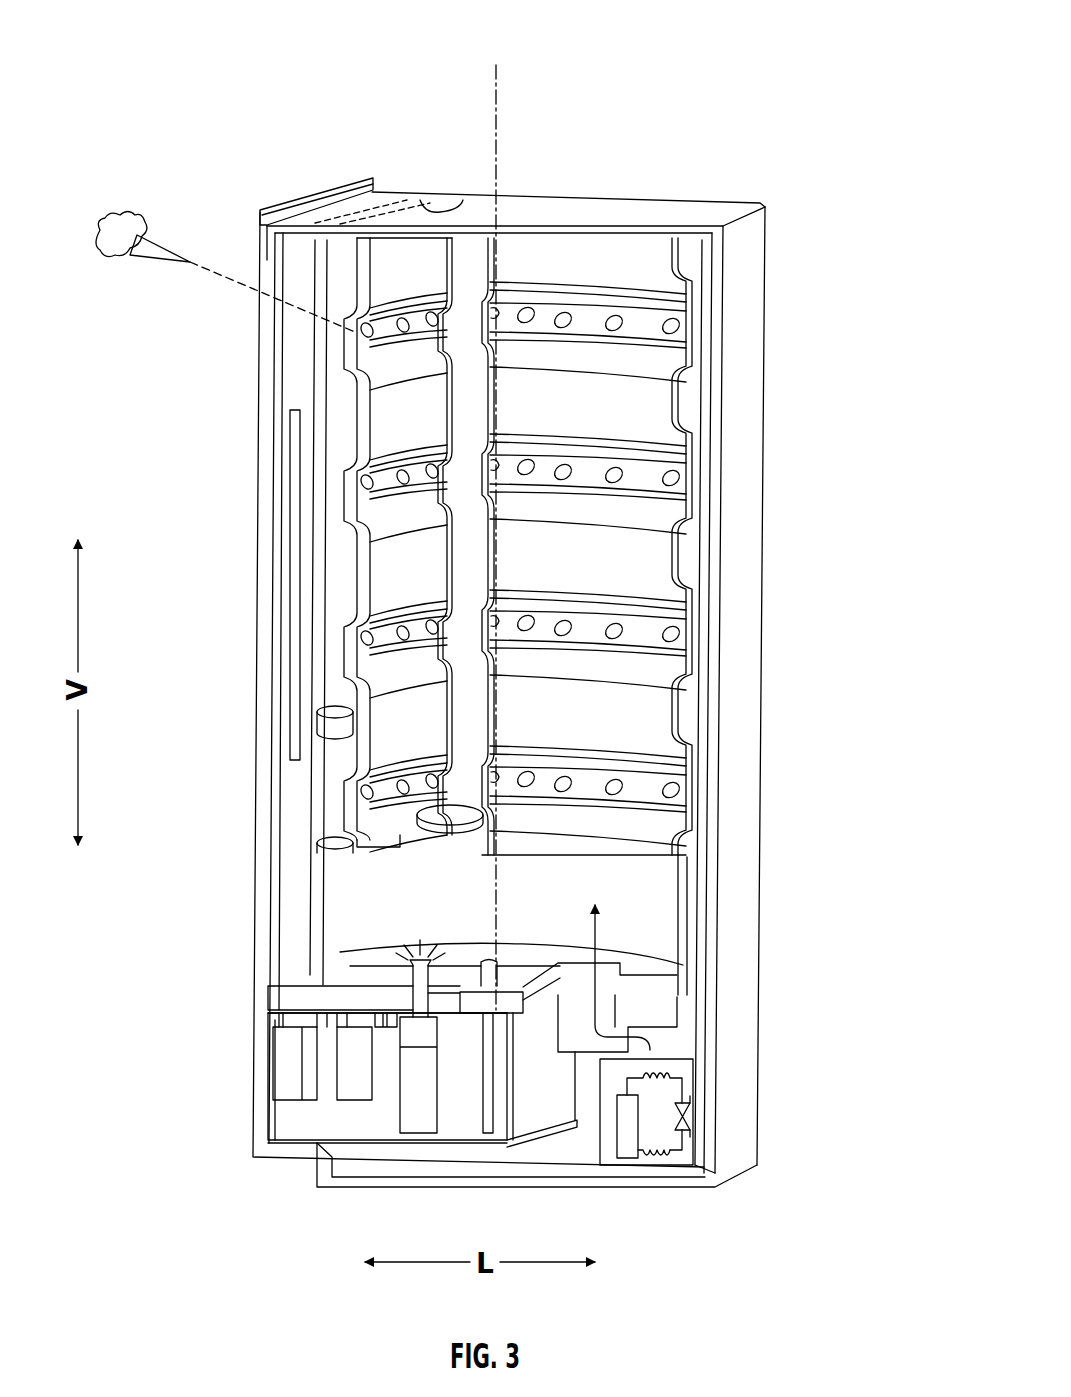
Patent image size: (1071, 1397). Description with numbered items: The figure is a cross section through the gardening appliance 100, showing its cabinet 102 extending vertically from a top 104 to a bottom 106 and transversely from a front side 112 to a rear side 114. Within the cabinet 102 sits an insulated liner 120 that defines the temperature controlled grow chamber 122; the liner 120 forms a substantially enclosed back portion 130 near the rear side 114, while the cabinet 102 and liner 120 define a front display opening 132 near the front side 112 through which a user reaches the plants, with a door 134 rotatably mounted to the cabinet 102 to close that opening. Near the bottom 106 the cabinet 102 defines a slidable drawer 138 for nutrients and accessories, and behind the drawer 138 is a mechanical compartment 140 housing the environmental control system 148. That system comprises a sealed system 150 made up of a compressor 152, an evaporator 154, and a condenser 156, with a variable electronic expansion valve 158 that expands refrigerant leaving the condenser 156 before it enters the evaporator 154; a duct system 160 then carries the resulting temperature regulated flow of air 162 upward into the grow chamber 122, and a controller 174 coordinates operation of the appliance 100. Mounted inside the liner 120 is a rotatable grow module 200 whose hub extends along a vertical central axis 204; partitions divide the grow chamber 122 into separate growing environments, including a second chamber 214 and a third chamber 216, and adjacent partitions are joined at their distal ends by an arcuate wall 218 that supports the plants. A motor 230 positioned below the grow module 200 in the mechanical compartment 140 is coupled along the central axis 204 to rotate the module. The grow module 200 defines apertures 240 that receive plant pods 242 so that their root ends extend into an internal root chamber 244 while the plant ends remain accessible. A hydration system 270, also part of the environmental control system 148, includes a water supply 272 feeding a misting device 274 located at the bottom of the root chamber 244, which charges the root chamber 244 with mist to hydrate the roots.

The gardening appliance 100 is at (822, 92).
The cabinet 102 is at (750, 343).
The top 104 is at (597, 248).
The bottom 106 is at (388, 1185).
The front side 112 is at (375, 178).
The rear side 114 is at (755, 520).
The insulated liner 120 is at (708, 240).
The grow chamber 122 is at (632, 262).
The enclosed back portion 130 is at (712, 640).
The front display opening 132 is at (330, 786).
The door 134 is at (258, 312).
The drawer 138 is at (262, 1085).
The mechanical compartment 140 is at (560, 1155).
The environmental control system 148 is at (698, 1106).
The sealed system 150 is at (694, 1126).
The compressor 152 is at (632, 1160).
The evaporator 154 is at (667, 1157).
The condenser 156 is at (668, 1060).
The variable electronic expansion valve 158 is at (695, 1120).
The duct system 160 is at (682, 1028).
The flow of air 162 is at (596, 927).
The controller 174 is at (457, 205).
The grow module 200 is at (553, 275).
The central axis 204 is at (508, 95).
The second chamber 214 is at (690, 588).
The third chamber 216 is at (332, 598).
The arcuate wall 218 is at (655, 422).
The motor 230 is at (472, 1016).
The aperture 240 is at (672, 782).
The plant pod 242 is at (165, 236).
The root chamber 244 is at (455, 480).
The hydration system 270 is at (412, 1050).
The water supply 272 is at (402, 1033).
The misting device 274 is at (330, 960).